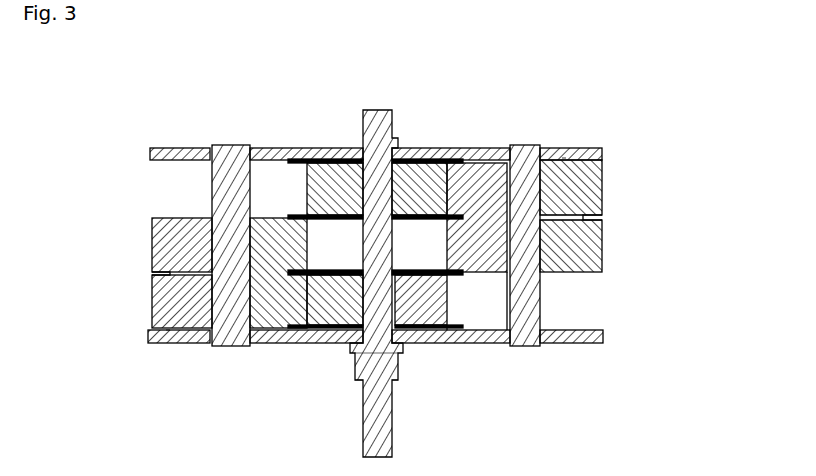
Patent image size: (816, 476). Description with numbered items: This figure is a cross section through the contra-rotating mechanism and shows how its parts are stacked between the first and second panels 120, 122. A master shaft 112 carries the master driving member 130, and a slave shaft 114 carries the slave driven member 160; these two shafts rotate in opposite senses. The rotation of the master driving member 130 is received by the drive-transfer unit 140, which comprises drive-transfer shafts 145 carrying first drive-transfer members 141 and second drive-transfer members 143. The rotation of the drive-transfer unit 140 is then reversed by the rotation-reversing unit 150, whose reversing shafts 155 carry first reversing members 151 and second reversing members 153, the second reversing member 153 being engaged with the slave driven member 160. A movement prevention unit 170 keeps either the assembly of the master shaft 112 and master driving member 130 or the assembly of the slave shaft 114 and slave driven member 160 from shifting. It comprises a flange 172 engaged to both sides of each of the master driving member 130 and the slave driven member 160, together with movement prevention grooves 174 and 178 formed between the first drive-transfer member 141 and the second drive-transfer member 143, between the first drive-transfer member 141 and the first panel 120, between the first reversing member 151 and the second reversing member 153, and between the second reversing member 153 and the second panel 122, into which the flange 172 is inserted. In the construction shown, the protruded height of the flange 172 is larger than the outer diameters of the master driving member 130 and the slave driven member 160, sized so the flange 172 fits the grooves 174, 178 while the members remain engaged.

The master shaft 112 is at (372, 110).
The slave shaft 114 is at (398, 377).
The first panel 120 is at (414, 107).
The second panel 122 is at (605, 335).
The master driving member 130 is at (422, 158).
The drive-transfer unit 140 is at (632, 216).
The first drive-transfer member 141 is at (600, 208).
The second drive-transfer member 143 is at (600, 237).
The drive-transfer shaft 145 is at (600, 182).
The rotation-reversing unit 150 is at (126, 273).
The first reversing member 151 is at (152, 232).
The second reversing member 153 is at (152, 297).
The reversing shaft 155 is at (220, 260).
The slave driven member 160 is at (338, 307).
The movement prevention unit 170 is at (370, 246).
The flange 172 is at (463, 215).
The movement prevention groove 174 is at (173, 275).
The movement prevention groove 178 is at (563, 160).